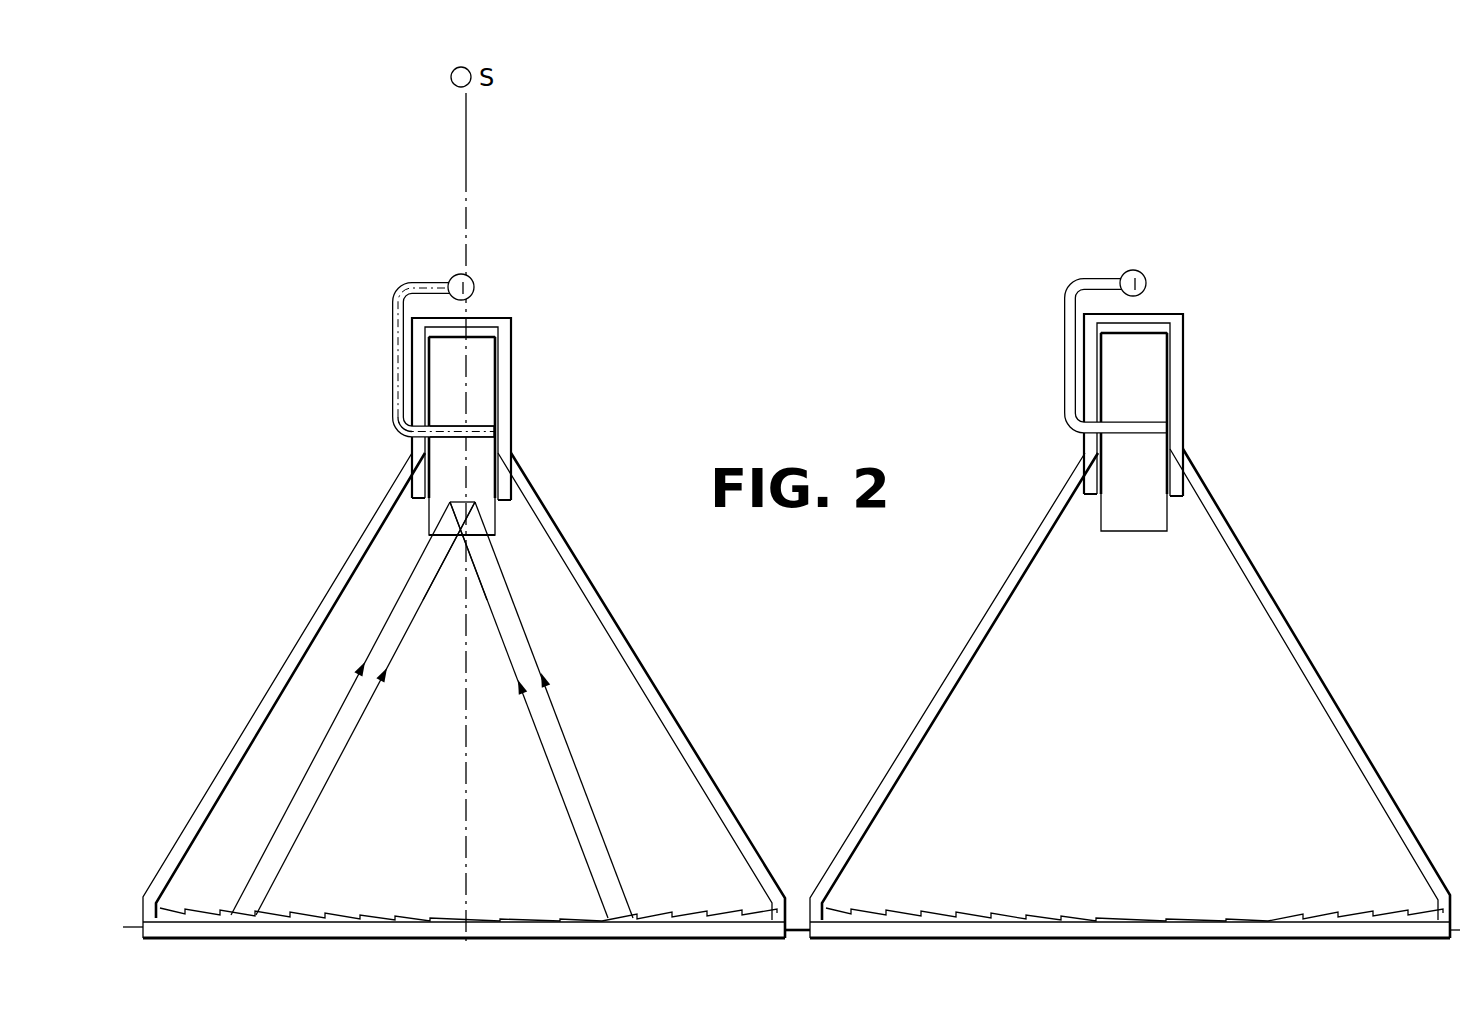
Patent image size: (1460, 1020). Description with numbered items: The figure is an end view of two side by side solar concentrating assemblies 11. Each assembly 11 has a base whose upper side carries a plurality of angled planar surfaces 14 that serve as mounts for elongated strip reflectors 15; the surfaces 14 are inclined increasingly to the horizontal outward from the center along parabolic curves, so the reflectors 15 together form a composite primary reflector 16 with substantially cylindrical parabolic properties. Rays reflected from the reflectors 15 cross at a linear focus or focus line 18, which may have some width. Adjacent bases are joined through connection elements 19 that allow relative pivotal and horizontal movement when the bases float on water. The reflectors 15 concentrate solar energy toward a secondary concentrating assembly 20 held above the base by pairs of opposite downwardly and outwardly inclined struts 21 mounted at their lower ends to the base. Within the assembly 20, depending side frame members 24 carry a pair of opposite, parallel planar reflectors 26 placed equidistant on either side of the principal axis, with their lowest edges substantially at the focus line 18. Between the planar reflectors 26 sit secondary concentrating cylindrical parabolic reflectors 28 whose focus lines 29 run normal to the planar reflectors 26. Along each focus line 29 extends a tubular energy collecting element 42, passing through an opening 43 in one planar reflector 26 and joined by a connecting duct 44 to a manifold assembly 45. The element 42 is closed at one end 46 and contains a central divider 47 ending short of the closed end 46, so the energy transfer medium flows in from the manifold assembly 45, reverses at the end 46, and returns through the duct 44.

The solar concentrating assembly 11 is at (787, 693).
The angled planar surfaces 14 is at (376, 908).
The elongated strip reflectors 15 is at (280, 917).
The composite primary reflector 16 is at (198, 880).
The focus line 18 is at (483, 500).
The connection elements 19 is at (799, 908).
The secondary concentrating assembly 20 is at (745, 415).
The struts 21 is at (263, 697).
The side frame members 24 is at (412, 456).
The planar reflectors 26 is at (425, 360).
The secondary concentrating cylindrical parabolic reflectors 28 is at (497, 528).
The focus lines 29 is at (474, 442).
The energy collecting element 42 is at (474, 430).
The opening 43 is at (420, 420).
The connecting duct 44 is at (391, 352).
The manifold assembly 45 is at (472, 279).
The closed end 46 is at (497, 430).
The divider 47 is at (439, 440).